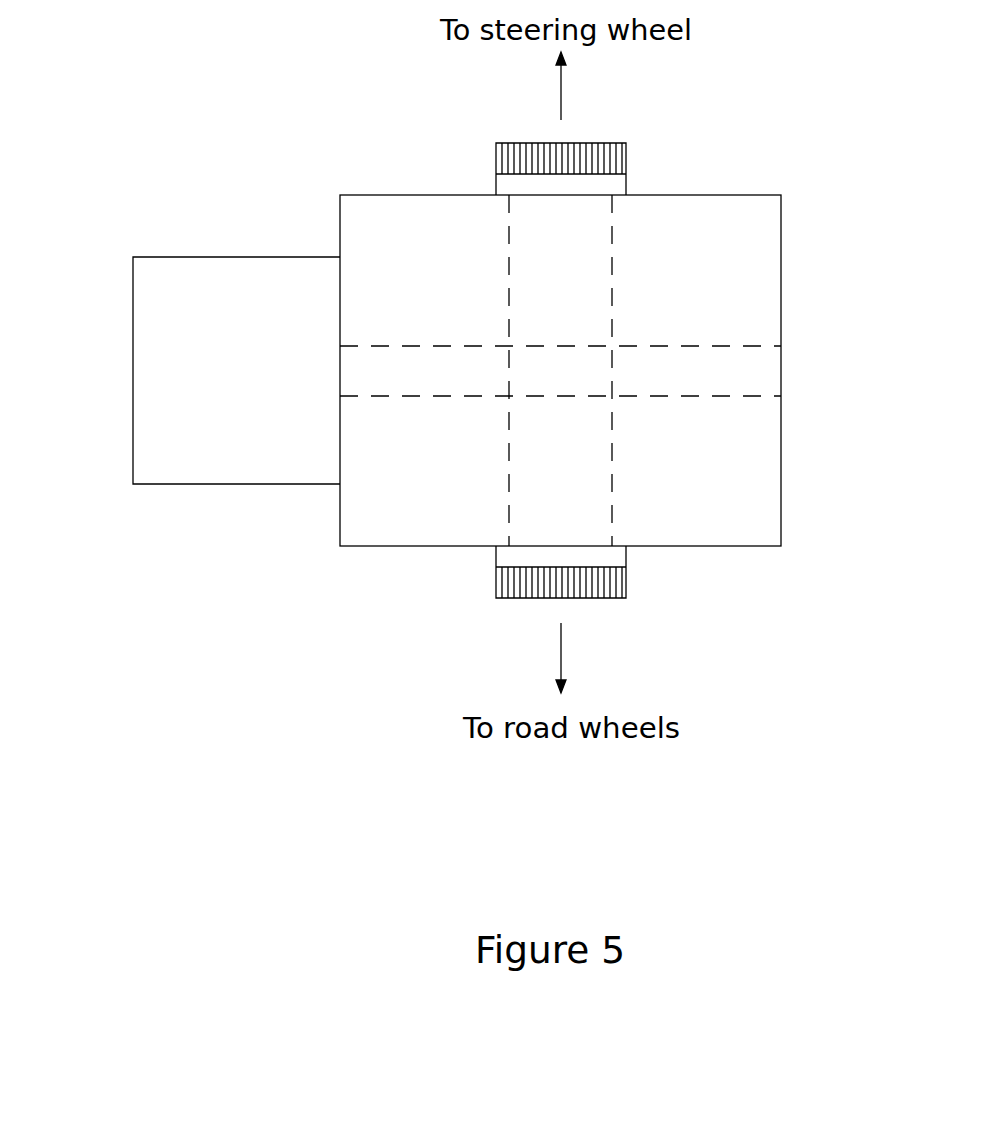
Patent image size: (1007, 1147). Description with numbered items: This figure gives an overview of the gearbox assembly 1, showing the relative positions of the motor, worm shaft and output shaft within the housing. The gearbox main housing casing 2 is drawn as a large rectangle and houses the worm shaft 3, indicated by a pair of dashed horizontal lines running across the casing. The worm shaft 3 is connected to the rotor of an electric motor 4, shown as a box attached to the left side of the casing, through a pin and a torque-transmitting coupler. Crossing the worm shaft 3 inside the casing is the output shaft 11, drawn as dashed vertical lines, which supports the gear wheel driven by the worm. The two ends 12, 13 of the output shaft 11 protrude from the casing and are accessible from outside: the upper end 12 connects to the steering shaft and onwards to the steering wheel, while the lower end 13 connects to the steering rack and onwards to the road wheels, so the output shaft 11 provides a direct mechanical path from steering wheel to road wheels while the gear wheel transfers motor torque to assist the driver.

The gearbox assembly 1 is at (325, 580).
The gearbox main housing casing 2 is at (781, 490).
The worm shaft 3 is at (713, 346).
The electric motor 4 is at (133, 435).
The output shaft 11 is at (613, 240).
The end of the output shaft 12 is at (627, 162).
The end of the output shaft 13 is at (627, 572).